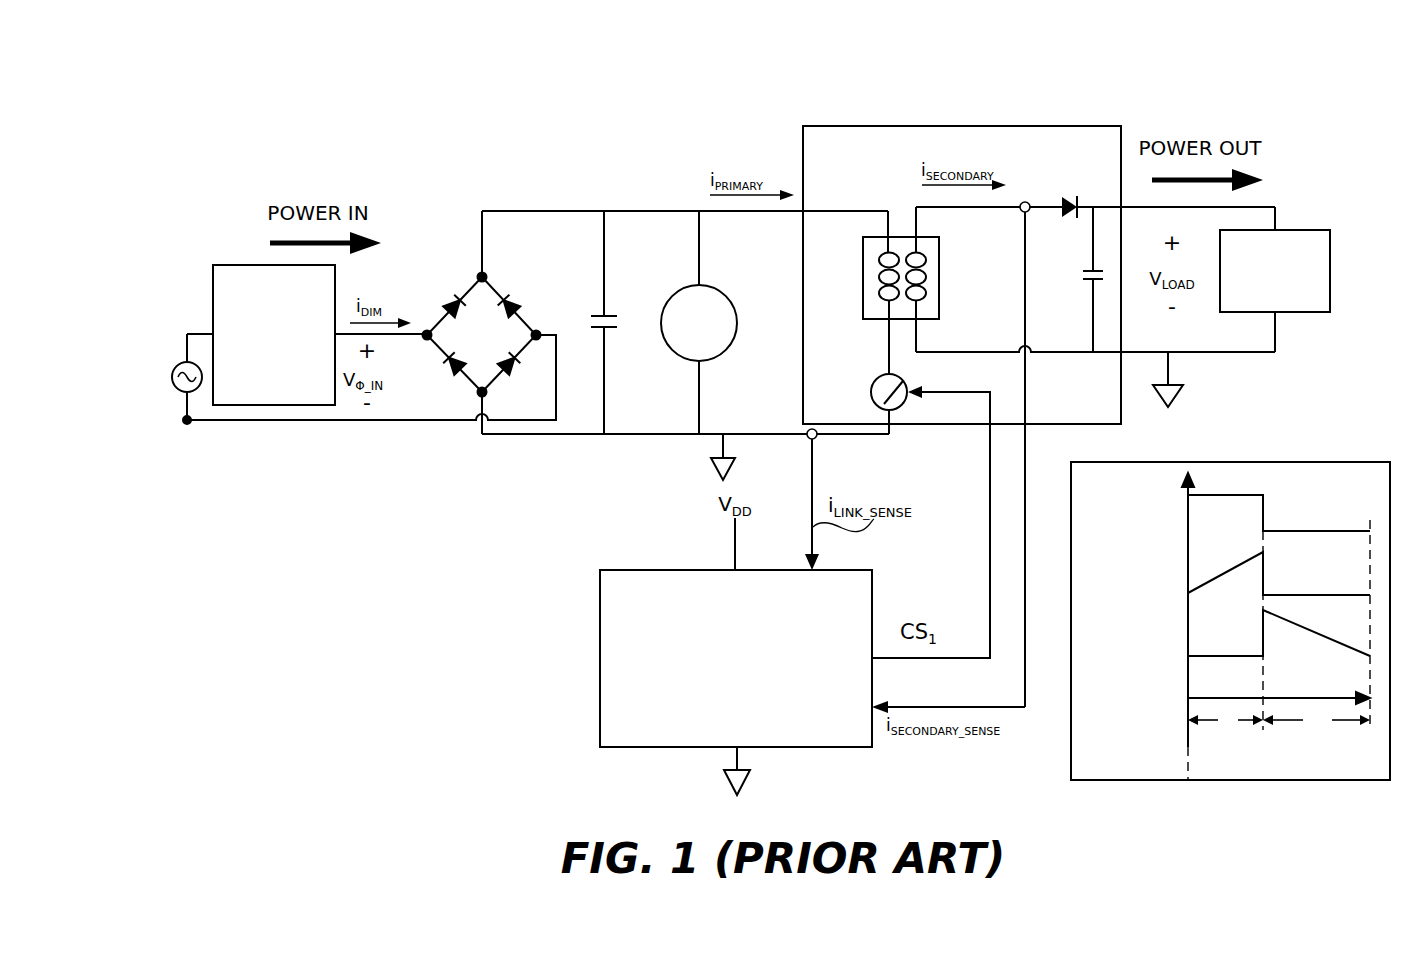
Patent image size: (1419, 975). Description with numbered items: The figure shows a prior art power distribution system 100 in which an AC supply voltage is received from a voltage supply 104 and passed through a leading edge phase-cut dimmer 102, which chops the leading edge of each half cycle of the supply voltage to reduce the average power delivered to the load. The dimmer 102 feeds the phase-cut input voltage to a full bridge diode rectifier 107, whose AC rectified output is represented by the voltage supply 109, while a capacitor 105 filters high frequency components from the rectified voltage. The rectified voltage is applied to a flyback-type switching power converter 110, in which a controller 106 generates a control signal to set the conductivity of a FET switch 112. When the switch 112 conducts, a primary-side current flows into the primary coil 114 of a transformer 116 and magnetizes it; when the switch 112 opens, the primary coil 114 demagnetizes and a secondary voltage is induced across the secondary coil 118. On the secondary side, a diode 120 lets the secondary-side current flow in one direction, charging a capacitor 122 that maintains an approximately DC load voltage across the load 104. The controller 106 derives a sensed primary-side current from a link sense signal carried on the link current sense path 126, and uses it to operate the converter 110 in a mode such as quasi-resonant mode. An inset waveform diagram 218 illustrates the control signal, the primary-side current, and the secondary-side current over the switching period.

The power distribution system 100 is at (1082, 90).
The phase-cut dimmer 102 is at (274, 335).
The voltage supply 104 is at (176, 390).
The capacitor 105 is at (598, 318).
The controller 106 is at (736, 682).
The full bridge diode rectifier 107 is at (482, 335).
The voltage supply 109 is at (735, 300).
The flyback-type switching power converter 110 is at (862, 126).
The switch 112 is at (872, 386).
The primary coil 114 is at (880, 298).
The transformer 116 is at (899, 263).
The secondary coil 118 is at (925, 298).
The diode 120 is at (1066, 200).
The capacitor 122 is at (1086, 279).
The link current sense path 126 is at (810, 490).
The timing diagram 218 is at (1208, 462).